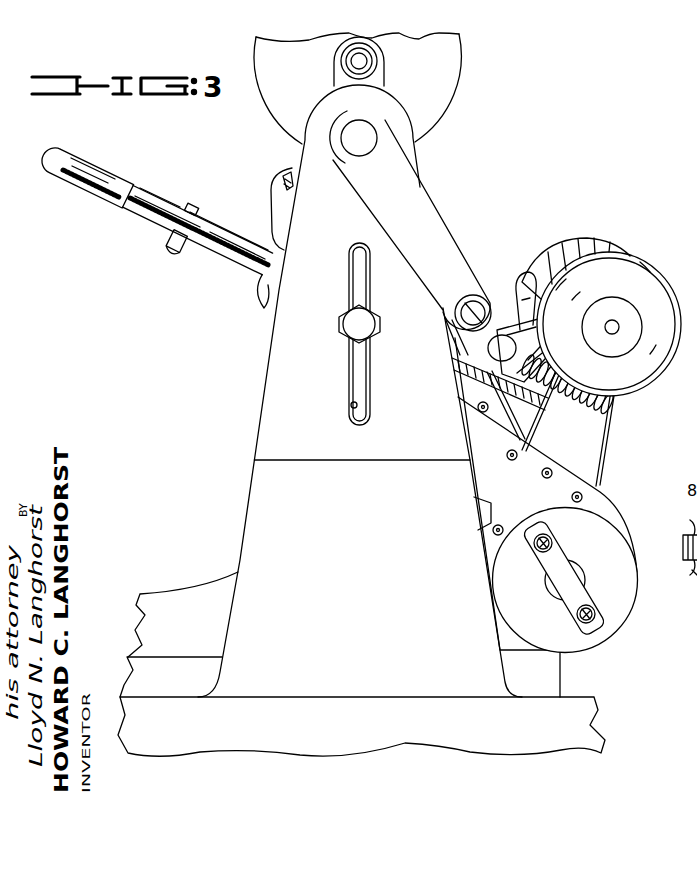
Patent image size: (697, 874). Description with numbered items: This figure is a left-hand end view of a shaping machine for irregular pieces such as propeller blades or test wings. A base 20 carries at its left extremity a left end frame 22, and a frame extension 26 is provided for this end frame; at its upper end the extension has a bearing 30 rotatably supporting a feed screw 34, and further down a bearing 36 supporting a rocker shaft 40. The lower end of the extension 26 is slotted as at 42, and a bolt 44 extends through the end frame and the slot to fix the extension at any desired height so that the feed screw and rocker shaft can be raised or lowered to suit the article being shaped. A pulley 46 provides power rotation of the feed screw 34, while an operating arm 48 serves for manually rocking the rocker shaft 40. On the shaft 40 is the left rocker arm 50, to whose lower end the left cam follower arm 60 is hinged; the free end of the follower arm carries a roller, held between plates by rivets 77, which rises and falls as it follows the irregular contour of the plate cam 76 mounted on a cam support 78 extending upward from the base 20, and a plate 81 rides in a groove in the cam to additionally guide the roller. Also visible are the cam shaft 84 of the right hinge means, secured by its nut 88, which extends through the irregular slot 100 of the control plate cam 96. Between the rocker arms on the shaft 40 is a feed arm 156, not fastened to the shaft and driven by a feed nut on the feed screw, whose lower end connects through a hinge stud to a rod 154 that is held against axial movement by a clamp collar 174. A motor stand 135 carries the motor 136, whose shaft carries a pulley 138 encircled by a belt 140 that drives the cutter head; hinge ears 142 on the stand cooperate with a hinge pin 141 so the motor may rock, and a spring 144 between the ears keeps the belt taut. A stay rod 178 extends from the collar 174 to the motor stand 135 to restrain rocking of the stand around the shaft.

The base 20 is at (595, 719).
The left end frame 22 is at (252, 505).
The frame extension 26 is at (268, 418).
The bearing 30 is at (377, 62).
The feed screw 34 is at (351, 61).
The bearing 36 is at (352, 116).
The rocker shaft 40 is at (367, 136).
The slot 42 is at (351, 405).
The bolt 44 is at (370, 323).
The pulley 46 is at (461, 73).
The operating arm 48 is at (455, 250).
The left rocker arm 50 is at (486, 507).
The left cam follower arm 60 is at (597, 500).
The plate cam 76 is at (190, 597).
The rivet 77 is at (547, 470).
The cam support 78 is at (164, 667).
The plate 81 is at (622, 606).
The cam shaft 84 is at (690, 590).
The nut 88 is at (692, 520).
The plate cam 96 is at (271, 192).
The irregular slot 100 is at (286, 175).
The motor stand 135 is at (572, 458).
The motor 136 is at (624, 266).
The pulley 138 is at (620, 285).
The belt 140 is at (608, 440).
The hinge pin 141 is at (504, 310).
The hinge ears 142 is at (625, 402).
The spring 144 is at (573, 410).
The rod 154 is at (191, 182).
The feed arm 156 is at (262, 306).
The clamp collar 174 is at (164, 247).
The stay rod 178 is at (457, 384).